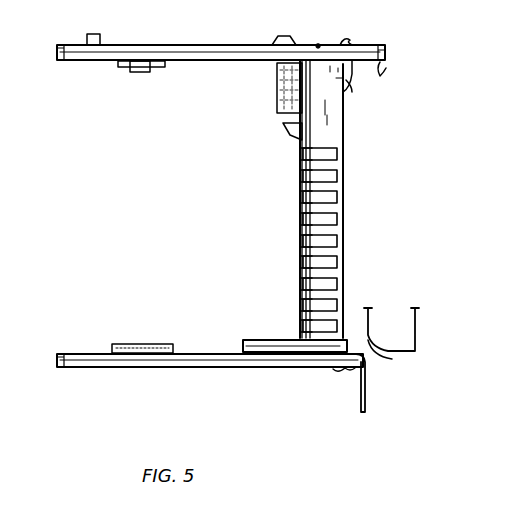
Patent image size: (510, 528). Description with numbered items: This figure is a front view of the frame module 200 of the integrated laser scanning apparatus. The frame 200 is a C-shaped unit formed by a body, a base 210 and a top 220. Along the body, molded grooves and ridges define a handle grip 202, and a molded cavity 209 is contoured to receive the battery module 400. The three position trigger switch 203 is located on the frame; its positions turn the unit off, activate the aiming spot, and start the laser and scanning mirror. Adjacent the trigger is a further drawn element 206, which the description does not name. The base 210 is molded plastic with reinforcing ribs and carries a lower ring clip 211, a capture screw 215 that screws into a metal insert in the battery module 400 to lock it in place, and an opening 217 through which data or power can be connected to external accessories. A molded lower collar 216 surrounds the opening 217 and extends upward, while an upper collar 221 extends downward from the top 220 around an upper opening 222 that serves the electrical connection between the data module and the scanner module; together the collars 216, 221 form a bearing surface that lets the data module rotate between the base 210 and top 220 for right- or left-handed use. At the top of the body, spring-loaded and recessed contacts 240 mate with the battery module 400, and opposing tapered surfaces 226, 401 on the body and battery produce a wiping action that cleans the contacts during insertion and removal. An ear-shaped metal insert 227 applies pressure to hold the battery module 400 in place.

The frame module 200 is at (130, 156).
The handle grip 202 is at (299, 228).
The three position trigger switch 203 is at (278, 100).
The upper guide member 206 is at (279, 70).
The molded cavity 209 is at (345, 172).
The base 210 is at (62, 368).
The lower ring clip 211 is at (370, 397).
The capture screw 215 is at (340, 372).
The lower collar 216 is at (110, 344).
The opening 217 is at (147, 372).
The top 220 is at (63, 61).
The upper collar 221 is at (163, 68).
The upper opening 222 is at (150, 43).
The tapered surface 226 is at (333, 318).
The ear-shaped metal insert 227 is at (386, 72).
The contacts 240 is at (352, 86).
The battery module 400 is at (418, 335).
The tapered surface 401 is at (380, 358).